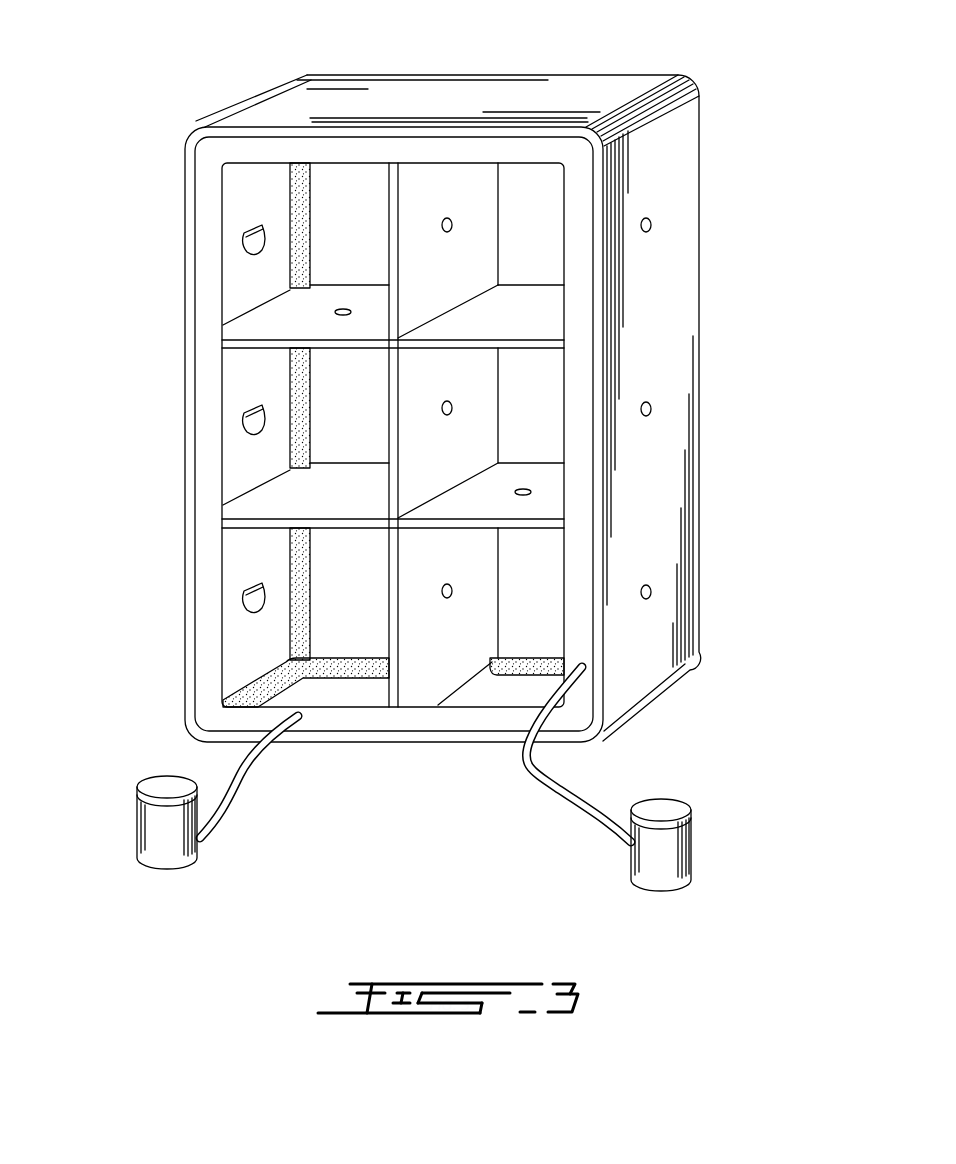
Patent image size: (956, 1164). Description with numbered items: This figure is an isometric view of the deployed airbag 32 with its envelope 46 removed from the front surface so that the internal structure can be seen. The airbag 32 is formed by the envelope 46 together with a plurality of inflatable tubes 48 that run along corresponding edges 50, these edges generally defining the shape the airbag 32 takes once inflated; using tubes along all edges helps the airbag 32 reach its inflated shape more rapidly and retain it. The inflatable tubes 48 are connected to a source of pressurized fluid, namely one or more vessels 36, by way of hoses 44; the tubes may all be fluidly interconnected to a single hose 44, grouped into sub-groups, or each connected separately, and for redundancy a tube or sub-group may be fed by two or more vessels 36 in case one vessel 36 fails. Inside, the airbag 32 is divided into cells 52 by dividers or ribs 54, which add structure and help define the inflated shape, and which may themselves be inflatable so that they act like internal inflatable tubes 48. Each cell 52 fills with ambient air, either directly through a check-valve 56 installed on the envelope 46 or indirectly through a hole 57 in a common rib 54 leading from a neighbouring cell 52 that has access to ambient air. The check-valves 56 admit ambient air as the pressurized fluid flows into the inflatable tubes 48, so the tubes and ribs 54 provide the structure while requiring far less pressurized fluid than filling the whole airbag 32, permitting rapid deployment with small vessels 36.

The airbag 32 is at (667, 155).
The vessel 36 is at (162, 828).
The hose 44 is at (237, 800).
The envelope 46 is at (532, 127).
The inflatable tube 48 is at (205, 272).
The edge 50 is at (242, 113).
The cell 52 is at (250, 463).
The rib 54 is at (468, 262).
The check-valve 56 is at (245, 430).
The hole 57 is at (449, 218).